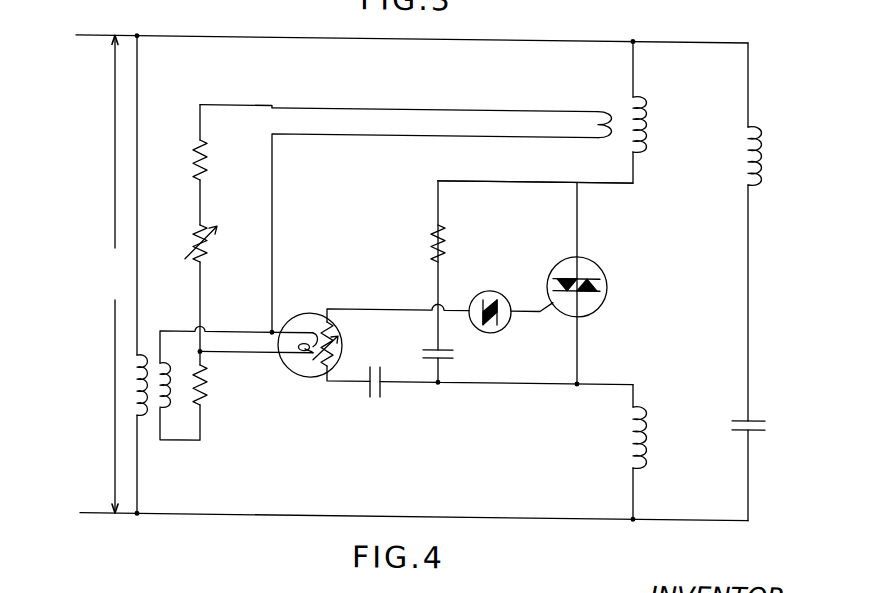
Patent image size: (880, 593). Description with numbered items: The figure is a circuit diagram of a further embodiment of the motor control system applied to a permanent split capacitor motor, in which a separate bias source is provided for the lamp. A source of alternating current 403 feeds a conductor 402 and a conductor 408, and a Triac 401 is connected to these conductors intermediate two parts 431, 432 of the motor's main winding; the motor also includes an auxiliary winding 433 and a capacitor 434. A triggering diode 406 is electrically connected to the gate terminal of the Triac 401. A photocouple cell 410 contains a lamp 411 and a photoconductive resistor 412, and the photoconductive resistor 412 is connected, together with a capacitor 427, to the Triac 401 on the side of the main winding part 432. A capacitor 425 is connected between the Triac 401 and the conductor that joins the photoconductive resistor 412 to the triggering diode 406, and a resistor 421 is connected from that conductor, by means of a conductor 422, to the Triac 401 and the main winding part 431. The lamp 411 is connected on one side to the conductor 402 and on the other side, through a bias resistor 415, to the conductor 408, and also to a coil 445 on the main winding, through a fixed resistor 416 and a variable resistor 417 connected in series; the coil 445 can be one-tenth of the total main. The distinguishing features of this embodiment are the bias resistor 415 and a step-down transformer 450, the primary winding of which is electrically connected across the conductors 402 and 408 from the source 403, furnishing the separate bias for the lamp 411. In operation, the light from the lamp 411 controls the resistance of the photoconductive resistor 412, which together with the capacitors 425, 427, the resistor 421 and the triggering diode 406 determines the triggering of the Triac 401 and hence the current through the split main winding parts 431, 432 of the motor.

The Triac 401 is at (606, 264).
The conductor 402 is at (190, 34).
The source of alternating current 403 is at (106, 269).
The triggering diode 406 is at (496, 286).
The conductor 408 is at (180, 513).
The photocouple cell 410 is at (415, 337).
The lamp 411 is at (312, 374).
The photoconductive resistor 412 is at (341, 356).
The bias resistor 415 is at (208, 390).
The fixed resistor 416 is at (208, 158).
The variable resistor 417 is at (204, 256).
The resistor 421 is at (452, 236).
The conductor 422 is at (468, 176).
The capacitor 425 is at (456, 352).
The capacitor 427 is at (384, 387).
The main winding part 431 is at (642, 119).
The main winding part 432 is at (643, 427).
The auxiliary winding 433 is at (760, 148).
The capacitor 434 is at (762, 410).
The coil 445 is at (583, 102).
The step-down transformer 450 is at (156, 427).